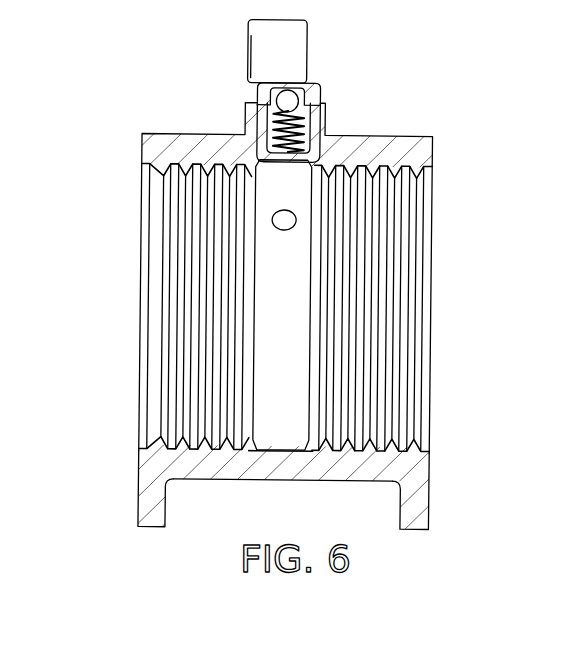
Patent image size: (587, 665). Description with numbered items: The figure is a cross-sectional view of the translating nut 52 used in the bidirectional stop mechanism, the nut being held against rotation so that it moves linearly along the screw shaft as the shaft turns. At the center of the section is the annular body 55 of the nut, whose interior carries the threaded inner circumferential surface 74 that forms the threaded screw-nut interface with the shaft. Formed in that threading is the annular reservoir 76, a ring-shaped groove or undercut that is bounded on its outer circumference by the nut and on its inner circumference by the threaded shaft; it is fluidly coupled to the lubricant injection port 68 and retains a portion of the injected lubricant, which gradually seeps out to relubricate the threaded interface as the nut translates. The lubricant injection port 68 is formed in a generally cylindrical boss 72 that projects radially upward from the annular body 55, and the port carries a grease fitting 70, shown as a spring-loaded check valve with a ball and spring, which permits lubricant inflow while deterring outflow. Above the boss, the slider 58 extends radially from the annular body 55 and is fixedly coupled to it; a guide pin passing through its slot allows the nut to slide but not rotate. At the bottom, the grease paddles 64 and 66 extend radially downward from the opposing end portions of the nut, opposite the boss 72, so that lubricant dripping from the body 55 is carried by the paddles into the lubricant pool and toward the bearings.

The translating nut 52 is at (120, 142).
The annular body 55 is at (293, 481).
The slider 58 is at (248, 54).
The grease paddle 64 is at (138, 505).
The grease paddle 66 is at (428, 505).
The lubricant injection port 68 is at (300, 166).
The grease fitting 70 is at (322, 117).
The boss 72 is at (245, 125).
The threaded inner circumferential surface 74 is at (410, 318).
The annular reservoir 76 is at (282, 305).